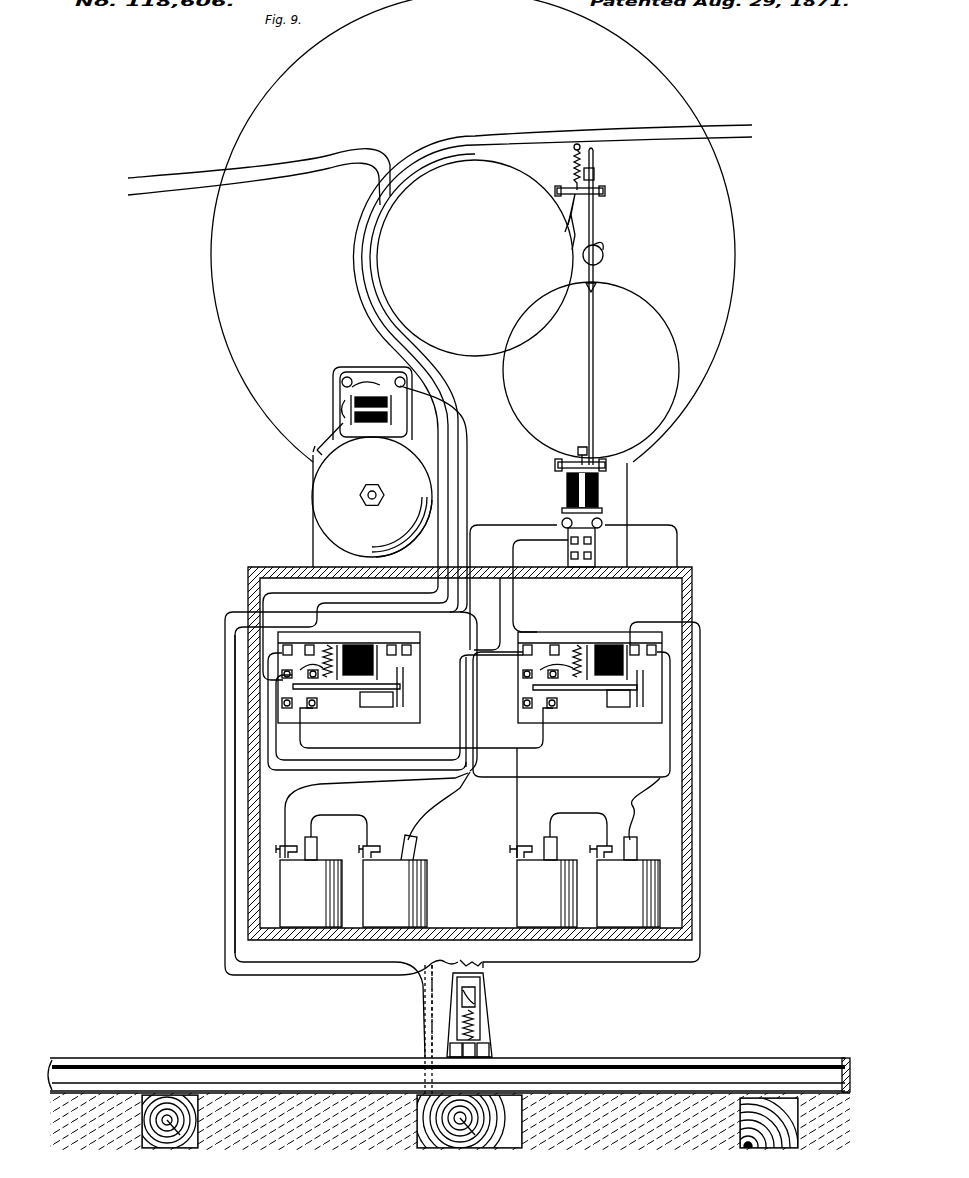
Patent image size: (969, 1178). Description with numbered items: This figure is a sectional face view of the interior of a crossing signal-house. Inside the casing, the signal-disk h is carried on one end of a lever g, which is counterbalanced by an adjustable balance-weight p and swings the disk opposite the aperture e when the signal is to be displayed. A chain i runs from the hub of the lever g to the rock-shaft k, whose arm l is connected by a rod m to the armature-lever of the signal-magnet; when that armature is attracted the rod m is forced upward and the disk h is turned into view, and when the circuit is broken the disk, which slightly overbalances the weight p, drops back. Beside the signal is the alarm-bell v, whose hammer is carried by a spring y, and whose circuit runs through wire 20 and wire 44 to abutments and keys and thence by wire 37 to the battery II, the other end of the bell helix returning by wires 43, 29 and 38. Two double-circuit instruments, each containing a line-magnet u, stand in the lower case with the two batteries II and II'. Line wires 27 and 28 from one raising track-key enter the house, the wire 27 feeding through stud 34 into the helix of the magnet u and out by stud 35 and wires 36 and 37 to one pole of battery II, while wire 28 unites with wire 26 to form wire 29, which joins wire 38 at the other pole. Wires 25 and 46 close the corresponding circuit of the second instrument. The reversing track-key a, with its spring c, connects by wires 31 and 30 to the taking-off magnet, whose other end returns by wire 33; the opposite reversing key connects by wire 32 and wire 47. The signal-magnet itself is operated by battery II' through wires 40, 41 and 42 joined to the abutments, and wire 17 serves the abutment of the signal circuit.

The wire 25 is at (301, 383).
The wire 26 is at (259, 170).
The wire 27 is at (493, 597).
The wire 28 is at (507, 396).
The wire 29 is at (417, 345).
The wire 30 is at (349, 812).
The wire 31 is at (602, 788).
The wire 32 is at (324, 819).
The wire 33 is at (572, 719).
The stud 34 is at (470, 753).
The stud 35 is at (377, 280).
The wire 36 is at (474, 712).
The wire 37 is at (376, 815).
The wire 38 is at (439, 806).
The wire 40 is at (519, 595).
The wire 41 is at (430, 729).
The wire 42 is at (525, 803).
The wire 43 is at (433, 476).
The wire 44 is at (372, 394).
The wire 46 is at (367, 716).
The wire 47 is at (458, 690).
The wire 17 is at (616, 507).
The wire 20 is at (371, 416).
The battery II is at (351, 871).
The battery II' is at (585, 870).
The reversing track-key a is at (461, 1031).
The spring c is at (409, 686).
The aperture e is at (475, 258).
The lever g is at (594, 239).
The signal-disk h is at (591, 370).
The chain i is at (572, 244).
The rock-shaft k is at (580, 189).
The arm l is at (566, 225).
The rod m is at (594, 295).
The balance-weight p is at (598, 306).
The electro-magnet u is at (470, 677).
The alarm-bell v is at (372, 497).
The spring y is at (330, 435).